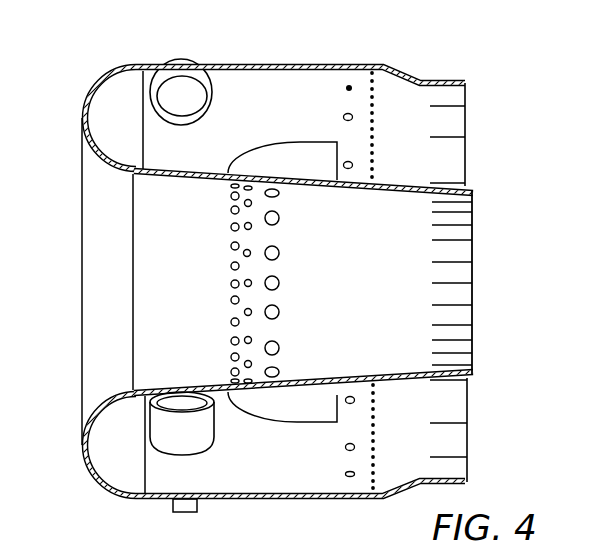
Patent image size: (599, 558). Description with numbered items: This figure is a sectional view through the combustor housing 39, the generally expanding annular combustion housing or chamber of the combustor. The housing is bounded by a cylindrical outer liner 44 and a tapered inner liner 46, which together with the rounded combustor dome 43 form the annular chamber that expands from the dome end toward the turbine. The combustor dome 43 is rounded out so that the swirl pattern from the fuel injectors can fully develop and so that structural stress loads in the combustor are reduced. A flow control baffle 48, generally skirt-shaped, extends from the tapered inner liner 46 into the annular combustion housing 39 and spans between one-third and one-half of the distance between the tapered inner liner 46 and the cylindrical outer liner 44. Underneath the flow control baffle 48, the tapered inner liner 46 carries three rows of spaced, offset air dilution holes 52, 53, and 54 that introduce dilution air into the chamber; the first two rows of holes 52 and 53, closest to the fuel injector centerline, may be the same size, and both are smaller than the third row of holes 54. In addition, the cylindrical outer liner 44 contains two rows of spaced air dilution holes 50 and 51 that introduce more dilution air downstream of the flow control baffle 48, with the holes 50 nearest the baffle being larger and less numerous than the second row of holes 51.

The combustor housing 39 is at (435, 70).
The combustor dome 43 is at (83, 105).
The cylindrical outer liner 44 is at (343, 66).
The tapered inner liner 46 is at (377, 372).
The flow control baffle 48 is at (296, 424).
The air dilution holes 50 is at (349, 88).
The air dilution holes 51 is at (372, 167).
The air dilution holes 52 is at (236, 226).
The air dilution holes 53 is at (247, 251).
The air dilution holes 54 is at (273, 283).